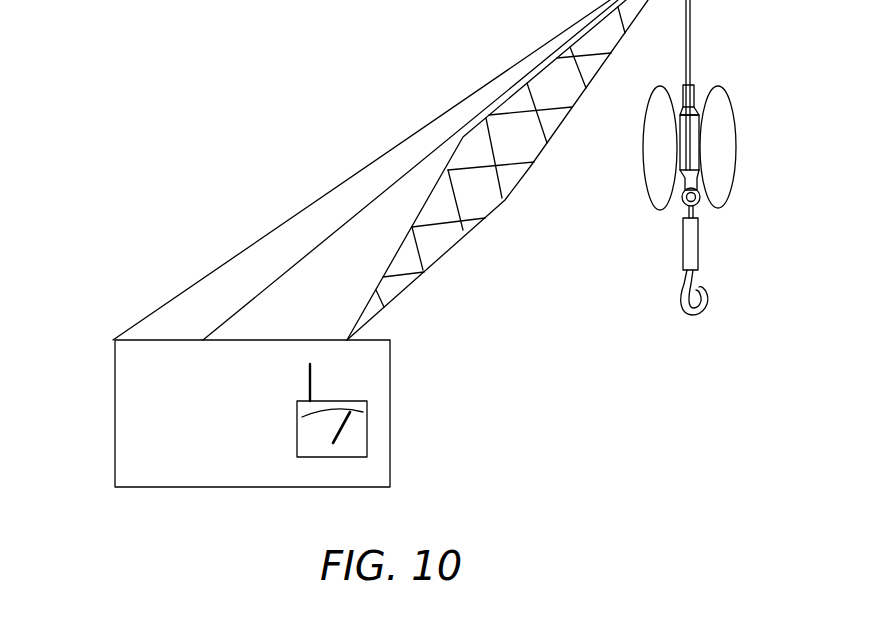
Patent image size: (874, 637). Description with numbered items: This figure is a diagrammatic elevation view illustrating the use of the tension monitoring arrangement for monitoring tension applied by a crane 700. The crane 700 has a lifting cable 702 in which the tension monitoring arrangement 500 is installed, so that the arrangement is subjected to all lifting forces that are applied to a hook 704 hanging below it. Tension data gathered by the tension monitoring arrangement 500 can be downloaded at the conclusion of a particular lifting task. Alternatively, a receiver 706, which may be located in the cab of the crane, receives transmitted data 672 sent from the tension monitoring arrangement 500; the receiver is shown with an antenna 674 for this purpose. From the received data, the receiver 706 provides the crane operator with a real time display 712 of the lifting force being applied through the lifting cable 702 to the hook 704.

The crane 700 is at (113, 421).
The lifting cable 702 is at (691, 22).
The transmitted data 672 is at (644, 153).
The tension monitoring arrangement 500 is at (678, 156).
The hook 704 is at (679, 309).
The antenna 674 is at (308, 378).
The receiver 706 is at (297, 434).
The real time display 712 is at (345, 428).